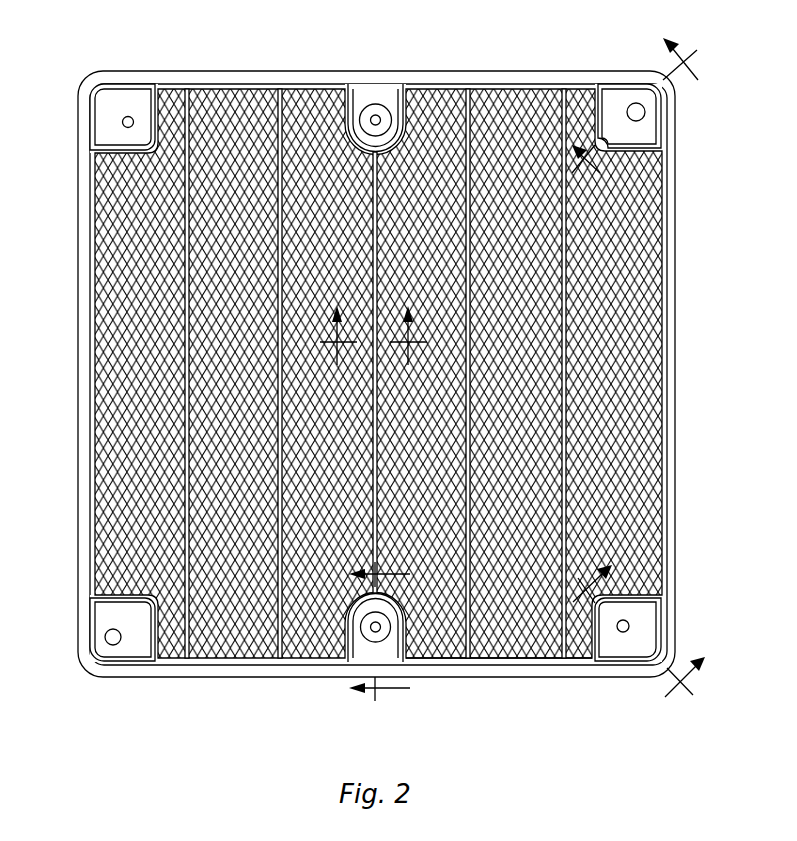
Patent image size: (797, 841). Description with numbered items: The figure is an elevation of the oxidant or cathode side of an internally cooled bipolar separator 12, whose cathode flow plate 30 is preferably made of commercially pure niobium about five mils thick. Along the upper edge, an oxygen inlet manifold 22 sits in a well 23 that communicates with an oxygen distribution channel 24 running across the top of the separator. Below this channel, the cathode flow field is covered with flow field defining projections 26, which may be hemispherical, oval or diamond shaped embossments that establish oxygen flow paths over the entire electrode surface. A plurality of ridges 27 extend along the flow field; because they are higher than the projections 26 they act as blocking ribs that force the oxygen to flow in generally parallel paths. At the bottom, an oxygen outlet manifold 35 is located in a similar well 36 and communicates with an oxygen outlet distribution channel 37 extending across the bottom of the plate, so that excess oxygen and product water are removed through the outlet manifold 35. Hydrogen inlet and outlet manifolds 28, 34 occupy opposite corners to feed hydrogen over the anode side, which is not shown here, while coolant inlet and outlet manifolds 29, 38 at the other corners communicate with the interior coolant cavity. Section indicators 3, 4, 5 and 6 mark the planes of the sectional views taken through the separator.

The bipolar separator 12 is at (62, 326).
The oxygen inlet manifold 22 is at (380, 104).
The well 23 is at (358, 141).
The oxygen distribution channel 24 is at (505, 89).
The flow field defining projections 26 is at (638, 270).
The ridges 27 is at (370, 452).
The hydrogen inlet manifold 28 is at (128, 116).
The coolant inlet manifold 29 is at (630, 104).
The cathode flow plate 30 is at (668, 366).
The hydrogen outlet manifold 34 is at (630, 625).
The oxygen outlet manifold 35 is at (360, 627).
The well 36 is at (363, 655).
The oxygen outlet distribution channel 37 is at (513, 658).
The coolant outlet manifold 38 is at (118, 645).
The section line 3- 3 is at (373, 349).
The section line 4- 4 is at (639, 639).
The section line 5- 5 is at (389, 631).
The section line 6- 6 is at (643, 117).